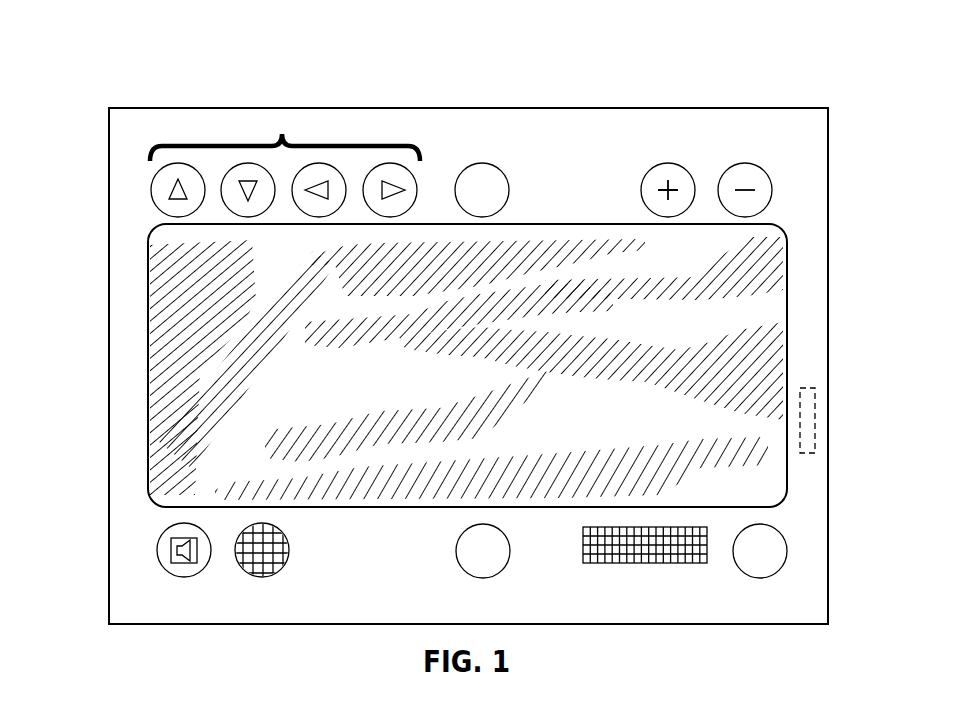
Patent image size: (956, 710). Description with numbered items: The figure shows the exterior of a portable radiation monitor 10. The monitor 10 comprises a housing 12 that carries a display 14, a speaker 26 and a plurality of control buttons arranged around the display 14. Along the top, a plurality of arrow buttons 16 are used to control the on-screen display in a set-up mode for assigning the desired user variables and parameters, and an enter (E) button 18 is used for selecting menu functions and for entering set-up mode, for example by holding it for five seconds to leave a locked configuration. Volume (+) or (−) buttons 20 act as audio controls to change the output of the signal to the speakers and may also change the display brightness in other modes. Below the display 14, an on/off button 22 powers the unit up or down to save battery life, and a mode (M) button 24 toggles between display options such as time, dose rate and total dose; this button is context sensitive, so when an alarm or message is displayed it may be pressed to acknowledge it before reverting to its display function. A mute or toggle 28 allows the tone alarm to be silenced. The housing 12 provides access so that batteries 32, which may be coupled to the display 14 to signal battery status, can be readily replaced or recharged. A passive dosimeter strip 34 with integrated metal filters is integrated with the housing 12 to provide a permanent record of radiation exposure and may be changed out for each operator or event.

The radiation monitor 10 is at (122, 48).
The housing 12 is at (805, 250).
The display 14 is at (174, 323).
The arrow buttons 16 is at (282, 136).
The enter (E) button 18 is at (483, 165).
The volume (+) or (−) buttons 20 is at (667, 165).
The on/off button 22 is at (505, 568).
The mode (M) button 24 is at (787, 548).
The speaker 26 is at (262, 578).
The mute or toggle 28 is at (185, 578).
The batteries 32 is at (815, 418).
The passive dosimeter strip 34 is at (622, 565).